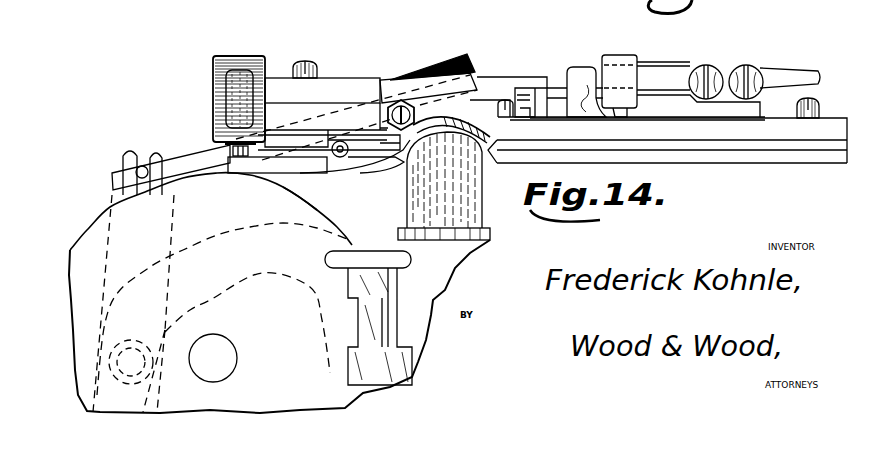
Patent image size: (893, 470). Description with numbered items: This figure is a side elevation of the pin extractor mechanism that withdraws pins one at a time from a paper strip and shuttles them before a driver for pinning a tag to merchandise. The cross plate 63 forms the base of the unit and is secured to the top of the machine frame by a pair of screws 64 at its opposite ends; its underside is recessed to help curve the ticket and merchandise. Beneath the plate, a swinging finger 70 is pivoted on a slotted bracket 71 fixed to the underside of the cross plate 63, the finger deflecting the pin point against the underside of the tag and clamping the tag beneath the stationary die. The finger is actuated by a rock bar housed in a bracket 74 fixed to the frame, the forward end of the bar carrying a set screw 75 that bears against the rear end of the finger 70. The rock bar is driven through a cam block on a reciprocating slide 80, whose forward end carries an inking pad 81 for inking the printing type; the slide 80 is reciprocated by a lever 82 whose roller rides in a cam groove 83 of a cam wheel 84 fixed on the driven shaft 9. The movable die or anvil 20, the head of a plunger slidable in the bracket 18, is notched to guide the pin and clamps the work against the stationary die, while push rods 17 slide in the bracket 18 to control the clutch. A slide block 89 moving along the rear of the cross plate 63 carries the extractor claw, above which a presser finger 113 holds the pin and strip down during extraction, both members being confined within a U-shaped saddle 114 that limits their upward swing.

The driven shaft 9 is at (220, 345).
The push rods 17 is at (360, 328).
The bracket 18 is at (412, 241).
The movable die or anvil 20 is at (433, 188).
The cross plate 63 is at (827, 130).
The screws 64 is at (312, 61).
The swinging finger 70 is at (405, 156).
The bracket 71 is at (348, 148).
The bracket 74 is at (229, 57).
The set screw 75 is at (230, 153).
The reciprocating slide 80 is at (187, 155).
The inking pad 81 is at (446, 58).
The lever 82 is at (109, 200).
The cam groove 83 is at (210, 248).
The cam wheel 84 is at (320, 210).
The slide block 89 is at (662, 61).
The presser finger 113 is at (576, 92).
The saddle 114 is at (621, 57).